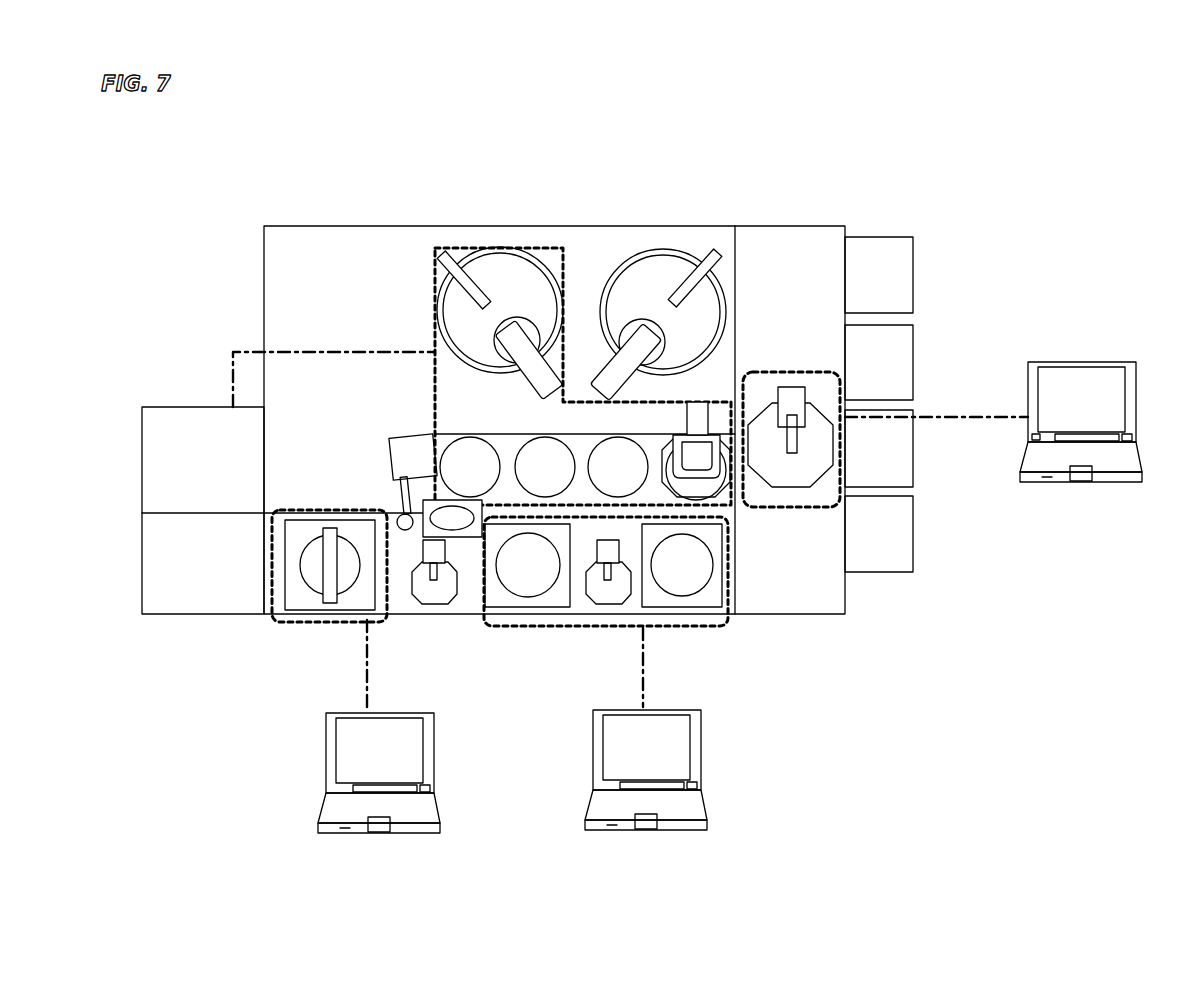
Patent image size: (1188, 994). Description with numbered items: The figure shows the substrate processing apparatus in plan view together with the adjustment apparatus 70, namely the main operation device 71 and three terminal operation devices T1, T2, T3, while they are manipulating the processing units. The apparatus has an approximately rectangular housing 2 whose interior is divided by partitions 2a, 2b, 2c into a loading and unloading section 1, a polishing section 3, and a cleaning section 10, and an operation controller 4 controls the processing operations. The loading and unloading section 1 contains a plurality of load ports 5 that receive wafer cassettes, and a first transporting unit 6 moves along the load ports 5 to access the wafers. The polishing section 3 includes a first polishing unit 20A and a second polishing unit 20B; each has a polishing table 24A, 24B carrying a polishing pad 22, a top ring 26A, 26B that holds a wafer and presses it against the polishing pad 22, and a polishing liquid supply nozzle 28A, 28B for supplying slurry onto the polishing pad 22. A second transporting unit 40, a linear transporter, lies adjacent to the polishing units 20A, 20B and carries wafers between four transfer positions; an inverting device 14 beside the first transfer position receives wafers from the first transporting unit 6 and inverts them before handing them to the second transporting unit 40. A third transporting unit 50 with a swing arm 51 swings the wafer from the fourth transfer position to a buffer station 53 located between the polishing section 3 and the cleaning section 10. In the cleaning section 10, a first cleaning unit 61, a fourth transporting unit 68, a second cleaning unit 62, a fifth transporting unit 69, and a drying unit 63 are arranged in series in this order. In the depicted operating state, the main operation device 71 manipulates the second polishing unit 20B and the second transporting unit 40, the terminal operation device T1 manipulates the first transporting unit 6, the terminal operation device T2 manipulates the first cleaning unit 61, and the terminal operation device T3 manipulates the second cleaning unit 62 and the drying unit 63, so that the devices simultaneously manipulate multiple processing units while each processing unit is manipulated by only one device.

The loading and unloading section 1 is at (798, 222).
The housing 2 is at (333, 226).
The partition 2a is at (737, 243).
The partition 2b is at (648, 605).
The partition 2c is at (329, 563).
The polishing section 3 is at (455, 150).
The operation controller 4 is at (185, 600).
The load port 5 is at (913, 272).
The first transporting unit 6 is at (795, 387).
The cleaning section 10 is at (305, 632).
The inverting device 14 is at (709, 422).
The first polishing unit 20A is at (674, 263).
The second polishing unit 20B is at (503, 256).
The polishing pad 22 is at (497, 277).
The first polishing table 24A is at (693, 250).
The second polishing table 24B is at (528, 250).
The first top ring 26A is at (640, 373).
The second top ring 26B is at (533, 318).
The first polishing liquid supply nozzle 28A is at (716, 252).
The second polishing liquid supply nozzle 28B is at (447, 252).
The second transporting unit 40 is at (505, 433).
The third transporting unit 50 is at (364, 453).
The swing arm 51 is at (398, 437).
The buffer station 53 is at (470, 538).
The first cleaning unit 61 is at (351, 620).
The second cleaning unit 62 is at (540, 613).
The drying unit 63 is at (692, 613).
The fourth transporting unit 68 is at (435, 606).
The fifth transporting unit 69 is at (608, 613).
The adjustment apparatus 70 is at (165, 395).
The main operation device 71 is at (205, 405).
The terminal operation device T1 is at (1080, 360).
The terminal operation device T2 is at (434, 770).
The terminal operation device T3 is at (700, 765).